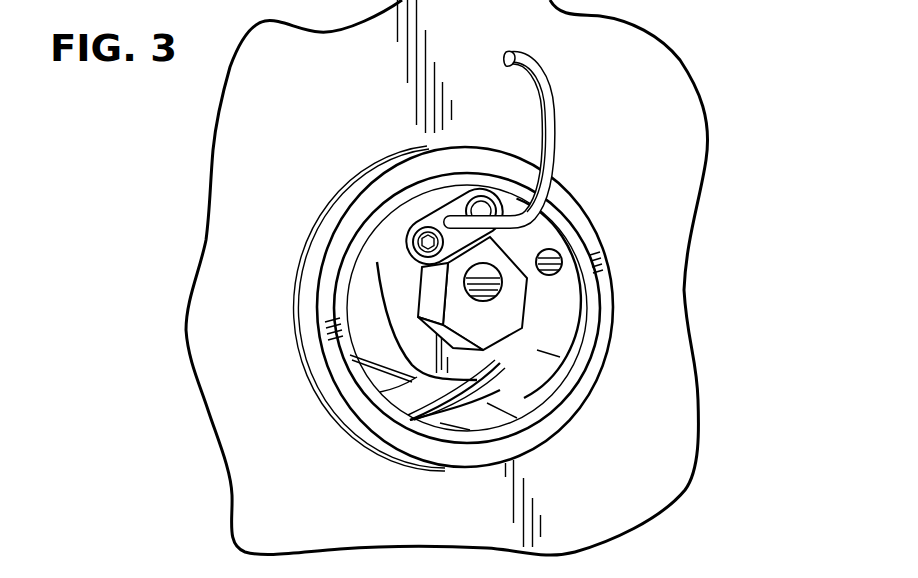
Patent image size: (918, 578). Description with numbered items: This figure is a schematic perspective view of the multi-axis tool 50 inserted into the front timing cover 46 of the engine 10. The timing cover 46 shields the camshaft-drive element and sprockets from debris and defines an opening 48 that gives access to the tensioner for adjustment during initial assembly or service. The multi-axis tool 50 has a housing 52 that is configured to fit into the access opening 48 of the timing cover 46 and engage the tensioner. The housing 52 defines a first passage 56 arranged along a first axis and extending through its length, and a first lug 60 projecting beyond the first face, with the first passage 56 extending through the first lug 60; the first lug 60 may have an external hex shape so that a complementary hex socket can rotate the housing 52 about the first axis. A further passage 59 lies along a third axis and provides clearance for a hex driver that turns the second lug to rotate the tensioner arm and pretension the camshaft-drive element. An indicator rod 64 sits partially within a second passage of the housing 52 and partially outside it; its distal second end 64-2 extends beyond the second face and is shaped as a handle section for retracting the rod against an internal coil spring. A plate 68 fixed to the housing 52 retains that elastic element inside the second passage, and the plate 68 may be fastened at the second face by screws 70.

The engine 10 is at (484, 277).
The timing cover 46 is at (638, 107).
The opening 48 is at (330, 265).
The multi-axis tool 50 is at (582, 250).
The housing 52 is at (380, 345).
The first passage 56 is at (500, 300).
The passage 59 is at (553, 252).
The first lug 60 is at (517, 296).
The indicator rod 64 is at (535, 114).
The second end 64-2 is at (504, 60).
The plate 68 is at (462, 192).
The screws 70 is at (430, 233).